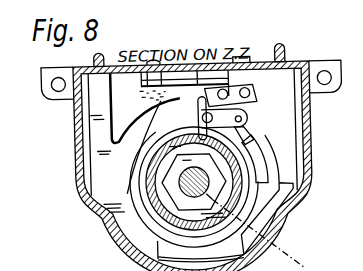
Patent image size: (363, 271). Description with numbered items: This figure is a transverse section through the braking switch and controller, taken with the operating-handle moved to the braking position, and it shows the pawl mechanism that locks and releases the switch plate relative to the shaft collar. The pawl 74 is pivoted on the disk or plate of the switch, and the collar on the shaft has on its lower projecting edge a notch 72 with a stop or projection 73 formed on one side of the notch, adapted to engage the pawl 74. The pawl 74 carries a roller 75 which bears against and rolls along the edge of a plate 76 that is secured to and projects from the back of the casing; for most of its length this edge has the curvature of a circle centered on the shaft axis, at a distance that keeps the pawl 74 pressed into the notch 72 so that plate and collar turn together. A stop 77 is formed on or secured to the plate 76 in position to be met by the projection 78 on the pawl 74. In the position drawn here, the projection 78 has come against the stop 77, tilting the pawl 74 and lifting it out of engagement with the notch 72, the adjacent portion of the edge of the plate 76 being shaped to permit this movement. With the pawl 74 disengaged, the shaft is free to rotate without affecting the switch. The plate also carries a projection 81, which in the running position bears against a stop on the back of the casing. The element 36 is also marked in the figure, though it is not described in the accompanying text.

The brake band end 36 is at (135, 149).
The notch 72 is at (249, 124).
The stop or projection 73 is at (253, 157).
The pawl 74 is at (224, 120).
The roller 75 is at (257, 117).
The plate 76 is at (145, 107).
The stop 77 is at (233, 80).
The projection 78 is at (197, 115).
The projection 81 is at (250, 204).